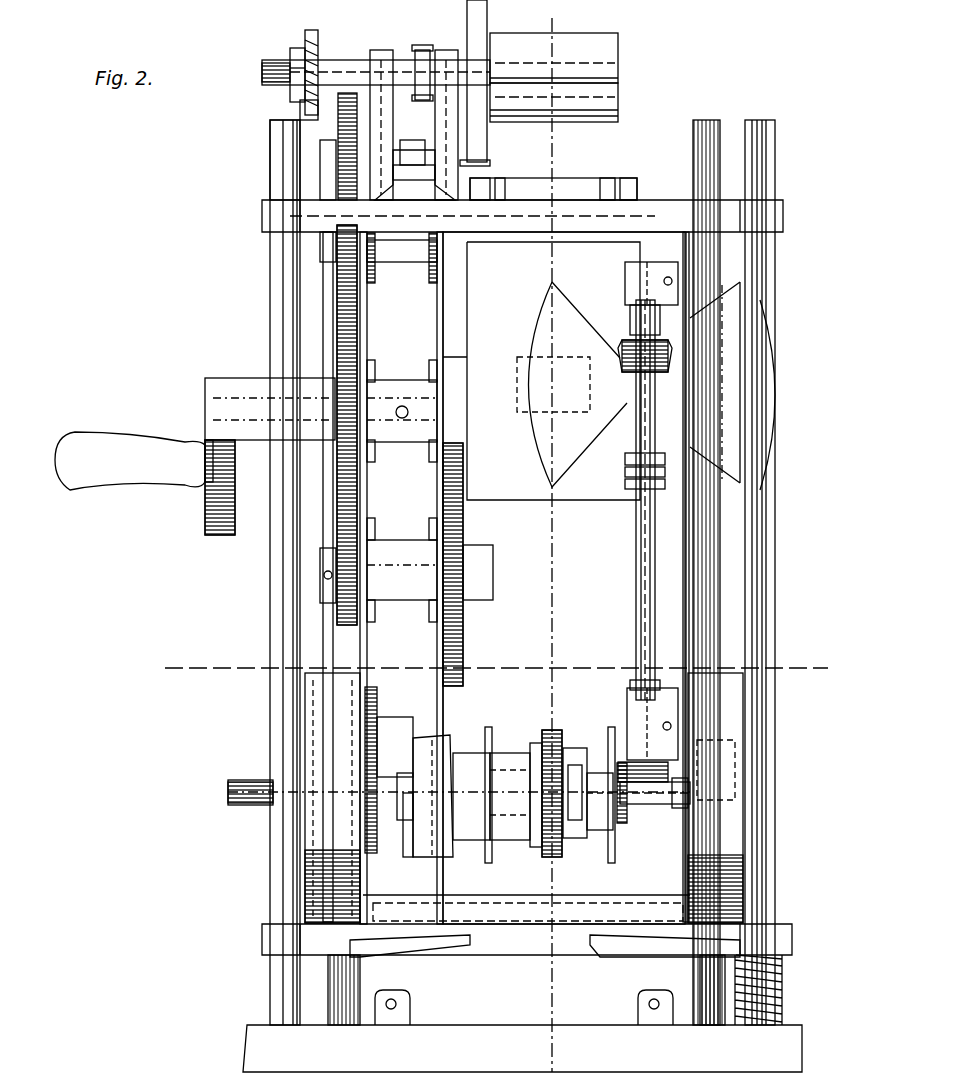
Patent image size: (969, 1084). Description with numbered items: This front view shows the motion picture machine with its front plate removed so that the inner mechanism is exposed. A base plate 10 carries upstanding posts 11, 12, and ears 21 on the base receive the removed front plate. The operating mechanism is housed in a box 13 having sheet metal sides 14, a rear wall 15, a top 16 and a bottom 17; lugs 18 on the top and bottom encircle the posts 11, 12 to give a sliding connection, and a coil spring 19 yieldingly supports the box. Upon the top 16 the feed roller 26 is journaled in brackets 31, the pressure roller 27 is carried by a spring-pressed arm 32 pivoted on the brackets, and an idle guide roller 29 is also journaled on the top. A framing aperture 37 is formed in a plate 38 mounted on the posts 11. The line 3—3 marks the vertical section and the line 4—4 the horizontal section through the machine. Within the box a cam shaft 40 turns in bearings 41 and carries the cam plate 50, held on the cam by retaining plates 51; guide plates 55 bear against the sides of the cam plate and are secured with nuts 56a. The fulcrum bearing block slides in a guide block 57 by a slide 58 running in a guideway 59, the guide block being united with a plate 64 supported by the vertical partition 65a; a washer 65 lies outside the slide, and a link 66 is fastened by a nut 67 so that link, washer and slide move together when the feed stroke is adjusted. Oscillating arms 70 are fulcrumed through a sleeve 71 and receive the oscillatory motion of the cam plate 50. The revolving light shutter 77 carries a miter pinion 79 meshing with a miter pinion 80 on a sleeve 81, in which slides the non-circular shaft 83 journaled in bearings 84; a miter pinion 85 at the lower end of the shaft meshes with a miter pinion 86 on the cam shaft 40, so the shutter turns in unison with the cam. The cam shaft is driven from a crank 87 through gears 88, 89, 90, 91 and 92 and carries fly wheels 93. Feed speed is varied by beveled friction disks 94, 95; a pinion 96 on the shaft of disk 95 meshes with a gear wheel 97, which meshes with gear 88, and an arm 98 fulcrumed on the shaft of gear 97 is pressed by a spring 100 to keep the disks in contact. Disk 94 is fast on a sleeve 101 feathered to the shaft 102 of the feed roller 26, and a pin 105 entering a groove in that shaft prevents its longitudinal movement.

The section line 3— 3 is at (560, 28).
The section line 4— 4 is at (493, 669).
The base plate 10 is at (522, 1048).
The post 11 is at (333, 638).
The post 12 is at (270, 594).
The box 13 is at (686, 541).
The sheet metal sides 14 is at (333, 660).
The rear wall 15 is at (522, 660).
The top 16 is at (652, 208).
The bottom 17 is at (530, 930).
The ears or lugs 18 is at (262, 212).
The coil spring 19 is at (784, 985).
The ears 21 is at (397, 1004).
The feed roller 26 is at (554, 58).
The pressure roller 27 is at (554, 102).
The idle guide roller 29 is at (580, 185).
The brackets 31 is at (382, 50).
The arm 32 is at (478, 0).
The framing aperture 37 is at (563, 360).
The plate 38 is at (588, 495).
The cam shaft 40 is at (648, 806).
The bearings 41 is at (690, 790).
The cam plate 50 is at (552, 728).
The retaining plates 51 is at (550, 858).
The guide plates 55 is at (560, 770).
The nuts 56a is at (575, 832).
The guide block 57 is at (470, 842).
The slide 58 is at (410, 858).
The guideway 59 is at (433, 740).
The plate 64 is at (487, 700).
The washer 65 is at (398, 790).
The vertical partition 65a is at (416, 495).
The link 66 is at (405, 875).
The nut 67 is at (393, 803).
The oscillating arms 70 is at (490, 726).
The sleeve 71 is at (510, 842).
The light shutter 77 is at (785, 393).
The miter pinion 79 is at (622, 412).
The miter pinion 80 is at (670, 358).
The sleeve 81 is at (650, 420).
The non-circular shaft 83 is at (638, 594).
The bearings 84 is at (670, 280).
The miter pinion 85 is at (668, 772).
The miter pinion 86 is at (622, 826).
The crank 87 is at (158, 458).
The gear 88 is at (337, 318).
The gear 89 is at (322, 560).
The gear 90 is at (463, 530).
The gear 91 is at (462, 670).
The gear 92 is at (455, 905).
The fly wheels 93 is at (524, 798).
The friction disk 94 is at (305, 34).
The friction disk 95 is at (292, 106).
The pinion 96 is at (318, 108).
The gear wheel 97 is at (337, 258).
The arm 98 is at (345, 104).
The spring 100 is at (330, 165).
The sleeve 101 is at (400, 62).
The shaft 102 is at (265, 66).
The pin 105 is at (445, 52).